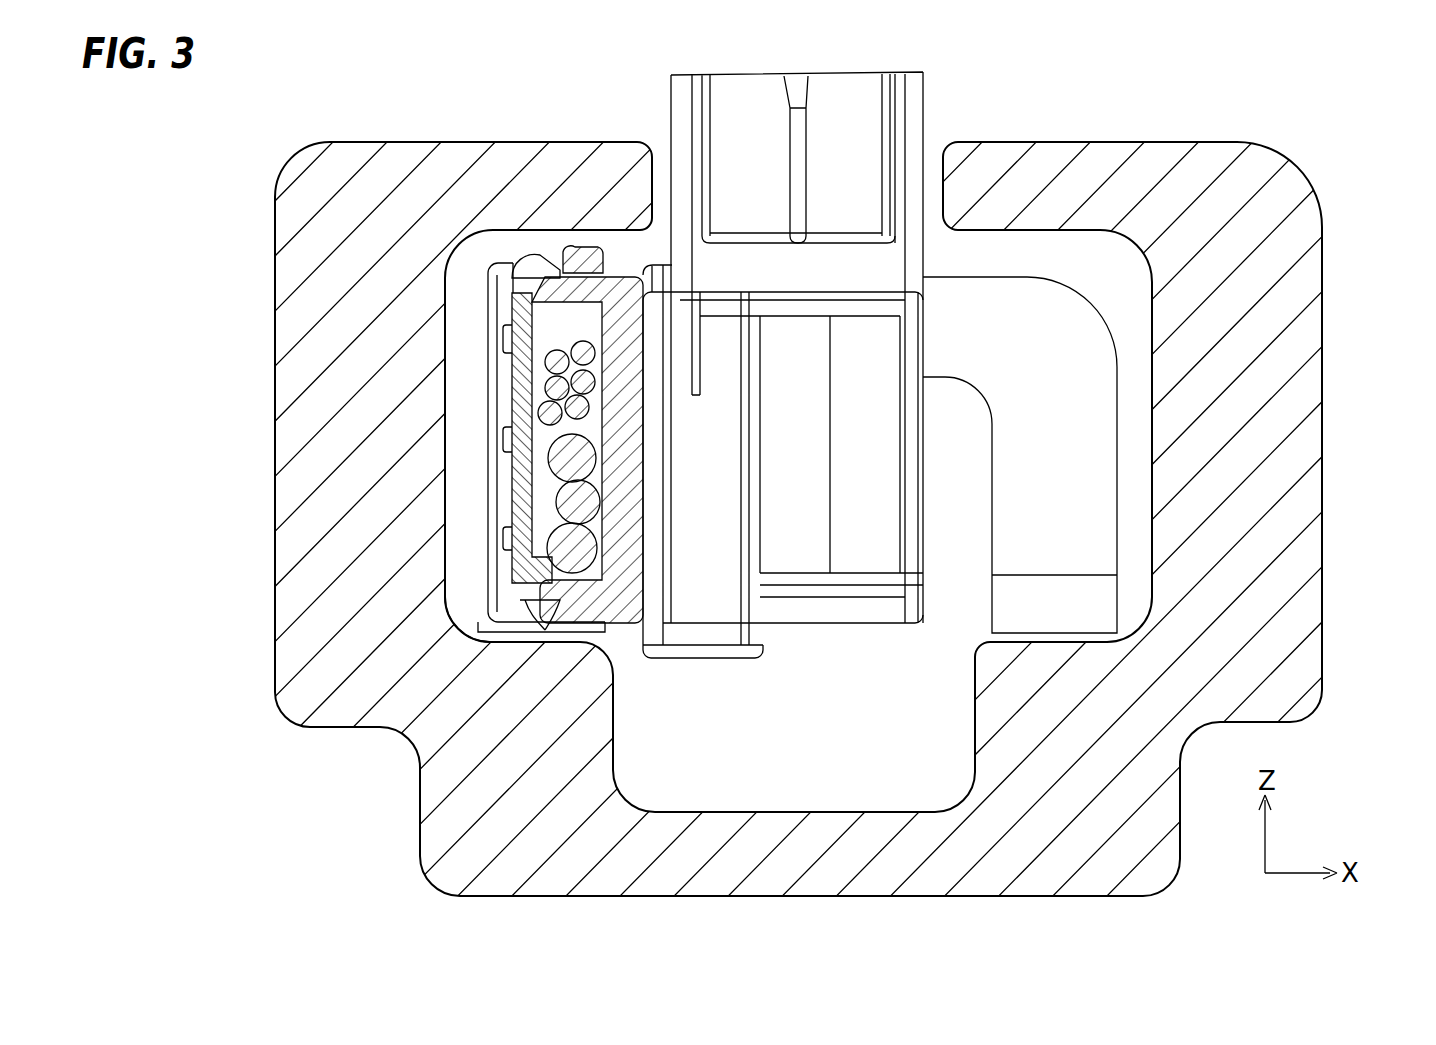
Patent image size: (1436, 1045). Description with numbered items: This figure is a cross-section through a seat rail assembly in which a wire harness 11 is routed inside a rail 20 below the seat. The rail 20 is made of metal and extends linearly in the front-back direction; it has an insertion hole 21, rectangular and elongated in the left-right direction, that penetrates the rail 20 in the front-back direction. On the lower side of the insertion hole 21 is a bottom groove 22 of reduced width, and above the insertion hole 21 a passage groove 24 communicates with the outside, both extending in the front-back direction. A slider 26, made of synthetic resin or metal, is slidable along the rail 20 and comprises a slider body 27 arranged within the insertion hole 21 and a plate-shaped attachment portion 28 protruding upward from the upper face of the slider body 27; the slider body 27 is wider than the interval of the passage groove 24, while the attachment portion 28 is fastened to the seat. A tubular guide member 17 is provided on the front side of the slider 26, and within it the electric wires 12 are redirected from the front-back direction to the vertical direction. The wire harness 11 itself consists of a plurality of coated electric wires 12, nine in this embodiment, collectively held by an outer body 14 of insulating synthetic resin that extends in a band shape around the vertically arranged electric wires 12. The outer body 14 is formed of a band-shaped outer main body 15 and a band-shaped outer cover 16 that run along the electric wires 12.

The wire harness 11 is at (390, 412).
The electric wires 12 is at (550, 420).
The outer body 14 is at (411, 412).
The outer main body 15 is at (620, 292).
The outer cover 16 is at (520, 313).
The guide member 17 is at (850, 95).
The rail 20 is at (1337, 473).
The insertion hole 21 is at (457, 596).
The bottom groove 22 is at (848, 812).
The passage groove 24 is at (653, 187).
The slider 26 is at (975, 346).
The slider body 27 is at (1058, 310).
The attachment portion 28 is at (917, 127).